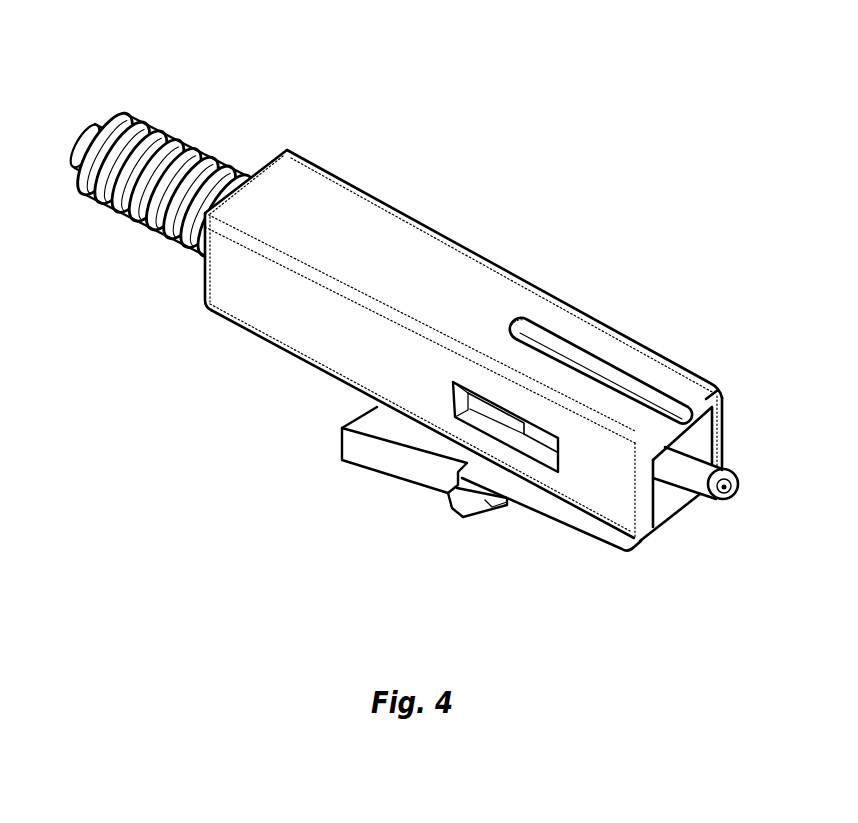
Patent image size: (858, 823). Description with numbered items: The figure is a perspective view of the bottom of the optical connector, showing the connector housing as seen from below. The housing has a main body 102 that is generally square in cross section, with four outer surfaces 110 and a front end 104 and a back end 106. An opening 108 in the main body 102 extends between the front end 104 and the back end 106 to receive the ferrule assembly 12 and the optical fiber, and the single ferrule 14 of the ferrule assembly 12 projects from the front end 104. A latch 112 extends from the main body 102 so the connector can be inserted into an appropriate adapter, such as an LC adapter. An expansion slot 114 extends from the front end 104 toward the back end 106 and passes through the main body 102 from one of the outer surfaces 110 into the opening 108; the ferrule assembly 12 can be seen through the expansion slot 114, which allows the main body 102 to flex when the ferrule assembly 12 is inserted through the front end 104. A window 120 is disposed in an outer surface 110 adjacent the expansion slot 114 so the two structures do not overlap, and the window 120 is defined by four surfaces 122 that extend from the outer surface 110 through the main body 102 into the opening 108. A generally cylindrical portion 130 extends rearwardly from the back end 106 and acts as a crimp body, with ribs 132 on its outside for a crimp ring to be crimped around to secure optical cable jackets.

The ferrule assembly 12 is at (552, 355).
The single ferrule 14 is at (730, 472).
The main body 102 is at (504, 315).
The front end 104 is at (710, 393).
The back end 106 is at (283, 148).
The opening 108 is at (702, 435).
The outer surfaces 110 is at (353, 207).
The latch 112 is at (370, 472).
The expansion slot 114 is at (598, 352).
The window 120 is at (562, 458).
The surfaces 122 is at (538, 457).
The generally cylindrical portion 130 is at (120, 113).
The ribs 132 is at (180, 140).